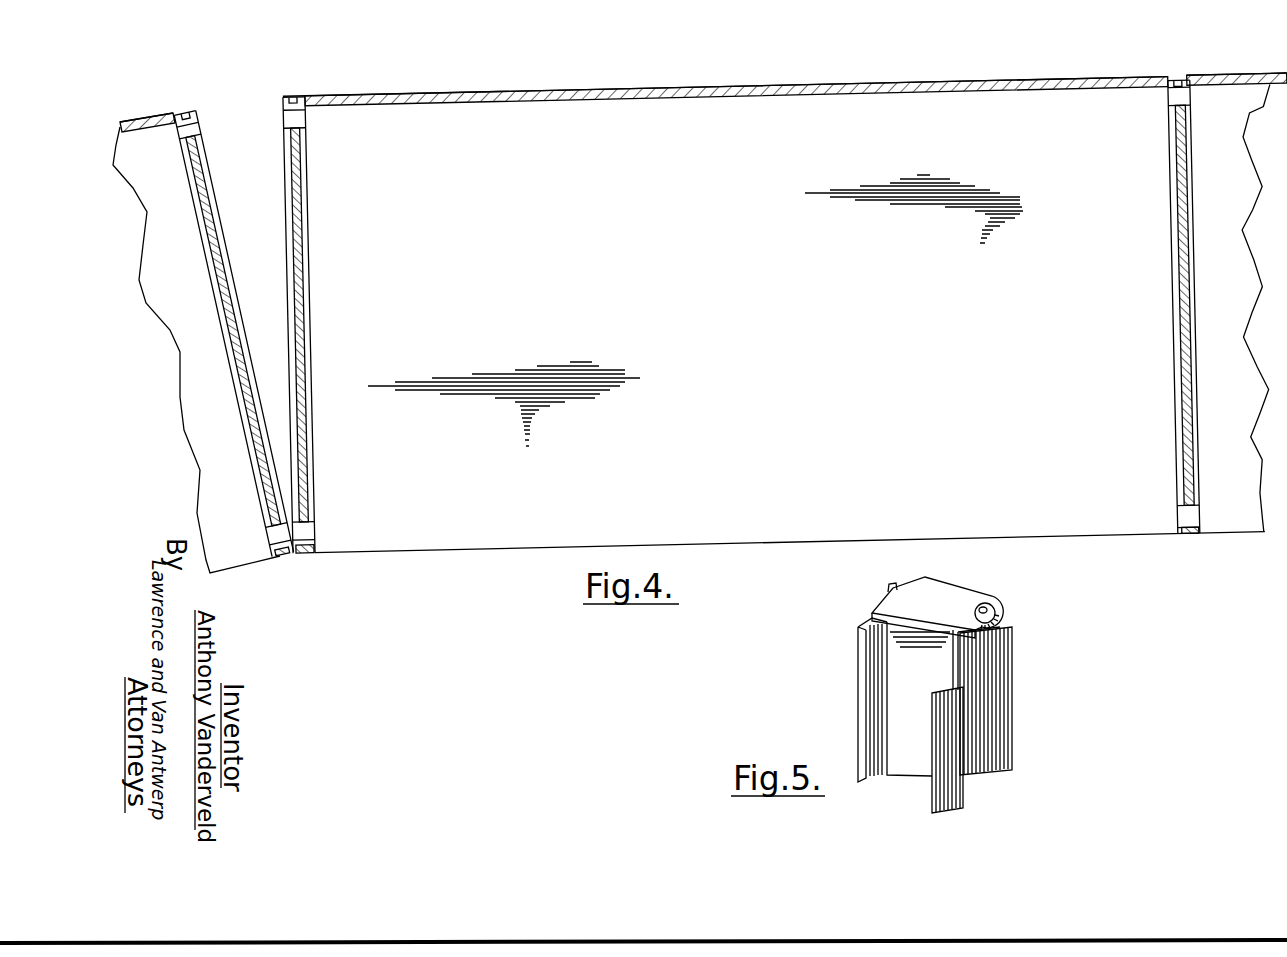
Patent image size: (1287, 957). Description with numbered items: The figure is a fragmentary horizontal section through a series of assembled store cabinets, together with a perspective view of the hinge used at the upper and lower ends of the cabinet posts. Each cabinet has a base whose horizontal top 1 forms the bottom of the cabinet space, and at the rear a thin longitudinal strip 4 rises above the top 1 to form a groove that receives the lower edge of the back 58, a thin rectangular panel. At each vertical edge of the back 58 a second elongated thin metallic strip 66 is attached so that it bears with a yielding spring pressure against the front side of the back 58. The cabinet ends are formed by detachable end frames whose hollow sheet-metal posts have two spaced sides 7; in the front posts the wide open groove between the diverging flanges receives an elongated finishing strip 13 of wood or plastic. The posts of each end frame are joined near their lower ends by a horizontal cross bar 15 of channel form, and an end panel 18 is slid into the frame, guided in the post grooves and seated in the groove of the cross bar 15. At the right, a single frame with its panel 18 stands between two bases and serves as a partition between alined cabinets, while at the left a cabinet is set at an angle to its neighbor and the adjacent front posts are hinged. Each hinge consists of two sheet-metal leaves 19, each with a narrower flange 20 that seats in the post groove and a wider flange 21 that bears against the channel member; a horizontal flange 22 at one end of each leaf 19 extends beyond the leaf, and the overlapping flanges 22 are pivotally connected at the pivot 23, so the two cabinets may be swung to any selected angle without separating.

In FIG. 4, the horizontal top 1 is at (185, 403).
In FIG. 4, the longitudinal strip 4 is at (690, 95).
In FIG. 4, the post side 7 is at (196, 120).
In FIG. 4, the finishing strip 13 is at (298, 557).
In FIG. 4, the horizontal cross bar 15 is at (237, 388).
In FIG. 4, the end panel 18 is at (220, 273).
In FIG. 5, the hinge leaf 19 is at (907, 600).
In FIG. 5, the flange 20 is at (890, 585).
In FIG. 5, the flange 21 is at (1000, 785).
In FIG. 5, the horizontal flange 22 is at (923, 620).
In FIG. 5, the pivot 23 is at (997, 610).
In FIG. 4, the back 58 is at (710, 98).
In FIG. 4, the second elongated thin metallic strip 66 is at (168, 127).